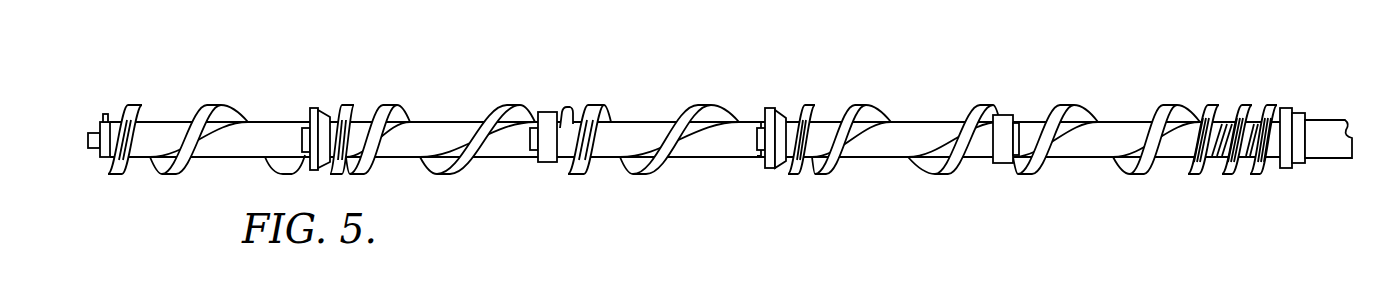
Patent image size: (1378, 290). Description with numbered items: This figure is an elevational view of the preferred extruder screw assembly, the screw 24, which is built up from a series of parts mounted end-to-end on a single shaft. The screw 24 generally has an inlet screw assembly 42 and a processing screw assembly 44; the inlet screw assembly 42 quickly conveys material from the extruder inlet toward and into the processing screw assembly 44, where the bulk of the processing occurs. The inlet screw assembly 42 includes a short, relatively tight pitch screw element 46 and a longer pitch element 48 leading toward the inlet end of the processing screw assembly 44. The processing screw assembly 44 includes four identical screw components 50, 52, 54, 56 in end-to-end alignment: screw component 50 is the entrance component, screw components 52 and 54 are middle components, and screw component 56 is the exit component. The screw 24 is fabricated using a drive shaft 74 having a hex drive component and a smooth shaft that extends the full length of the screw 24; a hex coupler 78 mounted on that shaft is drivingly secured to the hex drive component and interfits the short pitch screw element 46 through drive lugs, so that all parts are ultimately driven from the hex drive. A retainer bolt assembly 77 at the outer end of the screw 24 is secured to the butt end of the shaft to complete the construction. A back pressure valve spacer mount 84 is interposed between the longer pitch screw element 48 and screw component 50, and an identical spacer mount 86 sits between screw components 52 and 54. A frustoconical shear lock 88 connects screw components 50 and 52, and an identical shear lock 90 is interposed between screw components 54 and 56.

The screw 24 is at (613, 185).
The inlet screw assembly 42 is at (1270, 133).
The processing screw assembly 44 is at (654, 131).
The short pitch screw element 46 is at (1240, 162).
The longer pitch screw element 48 is at (1102, 147).
The screw component 50 is at (881, 147).
The screw component 52 is at (700, 158).
The screw component 54 is at (410, 146).
The screw component 56 is at (230, 148).
The drive shaft 74 is at (1328, 153).
The retainer bolt assembly 77 is at (100, 130).
The hex coupler 78 is at (1296, 112).
The back pressure valve spacer mount 84 is at (1004, 121).
The spacer mount 86 is at (547, 162).
The frustoconical shear lock 88 is at (783, 118).
The shear lock 90 is at (326, 108).